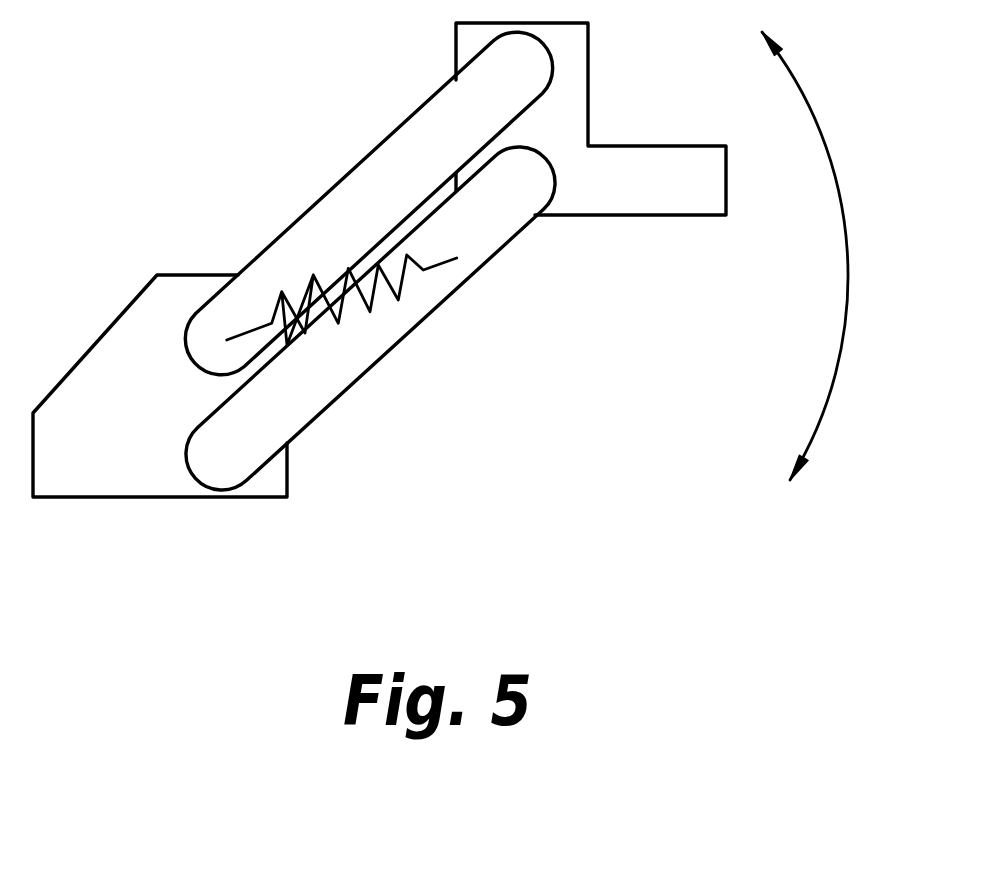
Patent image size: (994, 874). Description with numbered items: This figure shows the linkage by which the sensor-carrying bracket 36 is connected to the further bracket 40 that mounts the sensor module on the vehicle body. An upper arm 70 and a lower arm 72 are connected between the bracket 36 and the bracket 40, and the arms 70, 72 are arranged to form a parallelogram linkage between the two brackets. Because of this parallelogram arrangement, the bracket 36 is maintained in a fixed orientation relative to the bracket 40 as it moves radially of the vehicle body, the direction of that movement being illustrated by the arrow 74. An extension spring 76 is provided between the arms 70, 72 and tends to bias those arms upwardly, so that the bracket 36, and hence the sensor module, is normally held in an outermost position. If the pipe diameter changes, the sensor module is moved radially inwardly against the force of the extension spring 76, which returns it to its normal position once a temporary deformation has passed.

The bracket 36 is at (578, 65).
The bracket 40 is at (93, 472).
The upper arm 70 is at (337, 202).
The lower arm 72 is at (362, 338).
The arrow 74 is at (848, 292).
The extension spring 76 is at (373, 295).